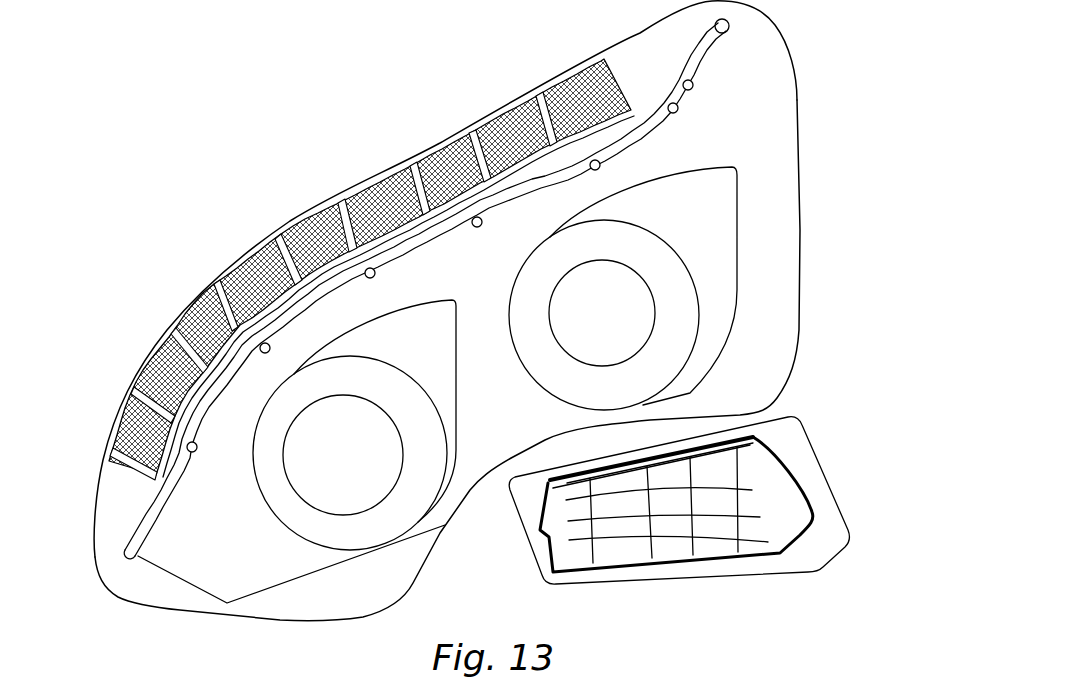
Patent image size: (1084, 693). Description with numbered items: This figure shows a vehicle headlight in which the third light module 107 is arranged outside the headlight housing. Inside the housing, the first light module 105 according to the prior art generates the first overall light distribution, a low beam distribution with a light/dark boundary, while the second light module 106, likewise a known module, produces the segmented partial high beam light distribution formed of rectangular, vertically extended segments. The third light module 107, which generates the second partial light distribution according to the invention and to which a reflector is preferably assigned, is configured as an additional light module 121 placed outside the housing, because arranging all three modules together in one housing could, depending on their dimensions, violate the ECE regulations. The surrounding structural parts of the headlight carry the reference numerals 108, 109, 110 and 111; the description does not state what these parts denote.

The first light module 105 is at (605, 313).
The second light module 106 is at (327, 462).
The third light module 107 is at (728, 502).
The tube rail with fasteners 108 is at (712, 66).
The mesh grille band 109 is at (325, 235).
The housing shell 110 is at (190, 270).
The housing inner surface 111 is at (755, 130).
The additional light module 121 is at (822, 434).